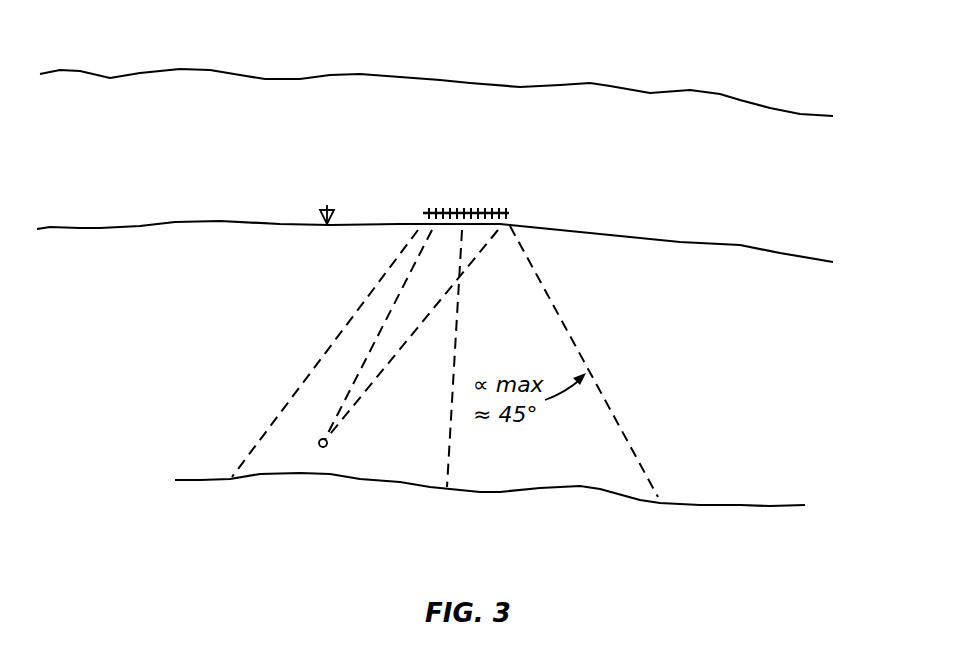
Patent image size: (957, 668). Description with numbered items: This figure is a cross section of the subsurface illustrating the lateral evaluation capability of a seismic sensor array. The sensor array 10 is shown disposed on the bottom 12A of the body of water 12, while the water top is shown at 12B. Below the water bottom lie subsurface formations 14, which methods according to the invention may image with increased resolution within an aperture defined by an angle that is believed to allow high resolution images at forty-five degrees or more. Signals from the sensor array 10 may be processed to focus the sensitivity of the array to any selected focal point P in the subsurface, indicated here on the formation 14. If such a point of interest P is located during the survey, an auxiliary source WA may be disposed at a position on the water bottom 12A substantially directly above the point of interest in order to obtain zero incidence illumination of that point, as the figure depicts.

The sensor array 10 is at (468, 191).
The body of water 12 is at (156, 151).
The bottom of the body of water 12A is at (187, 221).
The water top 12B is at (438, 77).
The subsurface formations 14 is at (198, 481).
The auxiliary source WA is at (327, 208).
The focal point P is at (323, 448).